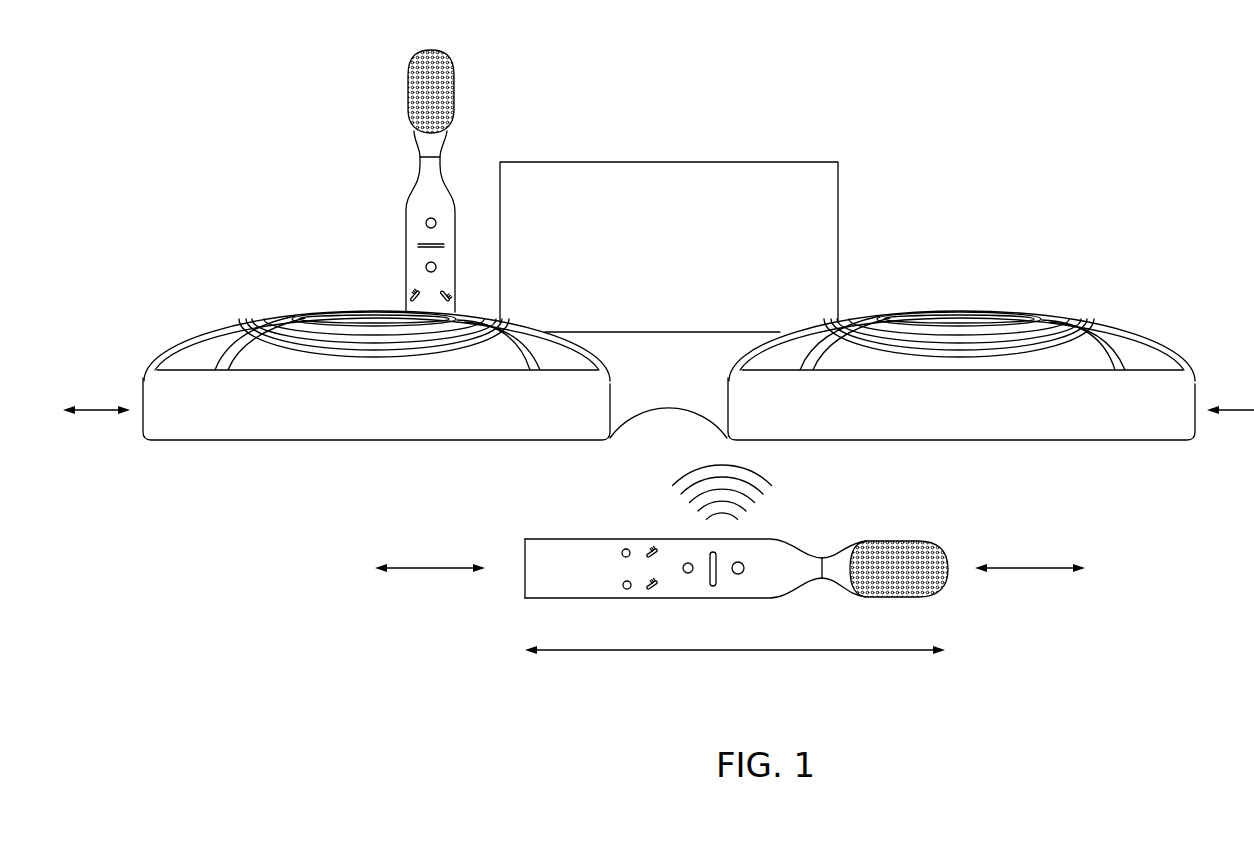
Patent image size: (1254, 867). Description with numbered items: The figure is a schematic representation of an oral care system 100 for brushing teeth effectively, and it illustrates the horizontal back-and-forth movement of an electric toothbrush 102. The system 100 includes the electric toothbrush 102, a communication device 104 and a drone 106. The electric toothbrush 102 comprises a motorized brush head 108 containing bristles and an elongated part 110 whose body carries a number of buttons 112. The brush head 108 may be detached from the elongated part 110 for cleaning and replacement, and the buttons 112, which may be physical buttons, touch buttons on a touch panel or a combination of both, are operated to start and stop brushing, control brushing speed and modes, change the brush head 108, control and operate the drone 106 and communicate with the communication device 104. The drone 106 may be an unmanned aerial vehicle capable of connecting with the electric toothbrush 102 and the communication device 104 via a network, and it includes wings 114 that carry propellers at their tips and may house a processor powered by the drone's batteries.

The oral care system 100 is at (1124, 84).
The electric toothbrush 102 is at (432, 176).
The communication device 104 is at (818, 190).
The drone 106 is at (1165, 382).
The motorized brush head 108 is at (408, 102).
The elongated part 110 is at (407, 212).
The buttons 112 is at (424, 267).
The wings 114 is at (203, 335).